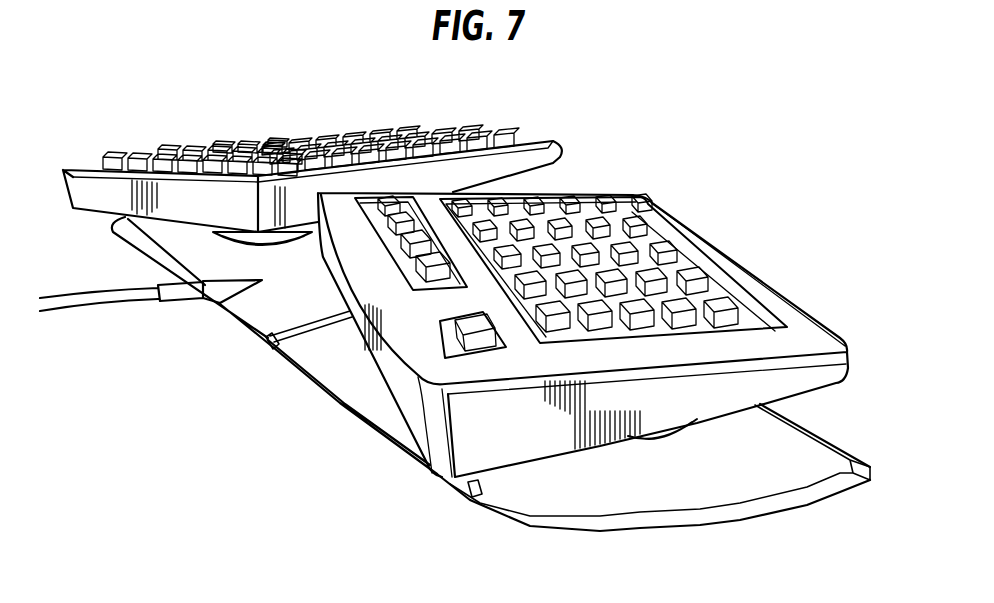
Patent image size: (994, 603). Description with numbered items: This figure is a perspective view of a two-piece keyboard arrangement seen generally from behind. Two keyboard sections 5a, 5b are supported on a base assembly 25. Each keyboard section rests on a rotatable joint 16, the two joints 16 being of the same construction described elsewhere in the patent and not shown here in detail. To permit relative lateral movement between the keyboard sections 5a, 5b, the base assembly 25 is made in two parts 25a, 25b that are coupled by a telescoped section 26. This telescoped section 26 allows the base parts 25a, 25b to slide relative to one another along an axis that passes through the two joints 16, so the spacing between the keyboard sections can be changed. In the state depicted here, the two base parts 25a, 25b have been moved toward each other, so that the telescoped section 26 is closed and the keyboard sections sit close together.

The keyboard section 5a is at (735, 268).
The keyboard section 5b is at (166, 153).
The rotatable joint 16 is at (273, 248).
The base assembly 25 is at (852, 495).
The base part 25a is at (527, 522).
The base part 25b is at (140, 262).
The telescoped section 26 is at (261, 352).